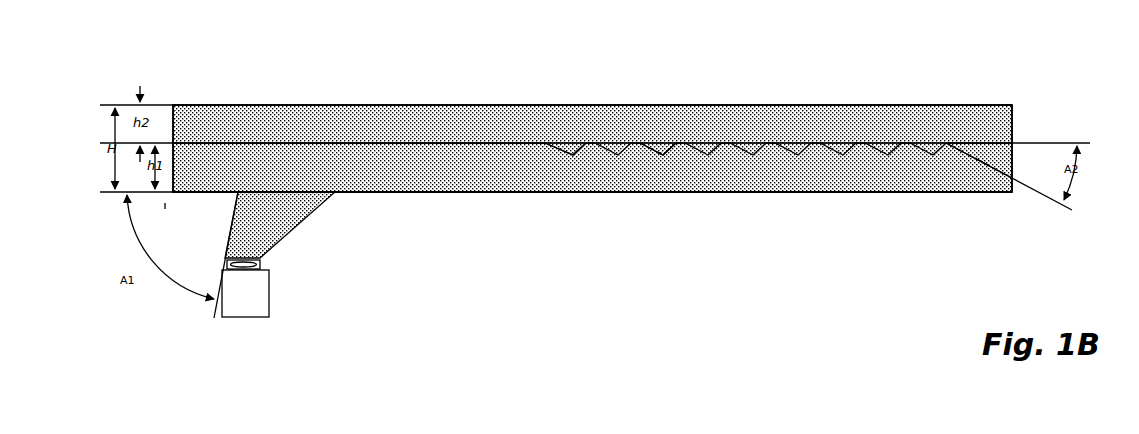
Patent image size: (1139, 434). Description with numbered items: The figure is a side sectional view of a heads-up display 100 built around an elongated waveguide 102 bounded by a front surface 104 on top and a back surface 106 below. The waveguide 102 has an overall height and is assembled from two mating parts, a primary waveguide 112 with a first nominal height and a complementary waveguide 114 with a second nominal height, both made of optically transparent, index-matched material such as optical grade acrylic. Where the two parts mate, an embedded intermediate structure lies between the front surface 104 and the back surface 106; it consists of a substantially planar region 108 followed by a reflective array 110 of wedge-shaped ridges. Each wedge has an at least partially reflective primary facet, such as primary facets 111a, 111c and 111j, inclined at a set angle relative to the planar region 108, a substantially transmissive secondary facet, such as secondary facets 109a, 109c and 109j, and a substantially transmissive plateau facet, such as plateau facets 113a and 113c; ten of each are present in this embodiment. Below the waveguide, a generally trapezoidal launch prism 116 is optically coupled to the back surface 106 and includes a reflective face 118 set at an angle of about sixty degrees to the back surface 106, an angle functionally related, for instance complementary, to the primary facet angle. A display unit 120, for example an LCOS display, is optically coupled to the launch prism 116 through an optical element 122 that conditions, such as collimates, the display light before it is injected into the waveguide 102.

The display 100 is at (172, 50).
The waveguide 102 is at (750, 100).
The front surface 104 is at (290, 104).
The back surface 106 is at (487, 193).
The substantially planar region 108 is at (442, 143).
The reflective array 110 is at (799, 150).
The primary waveguide 112 is at (407, 183).
The complementary waveguide 114 is at (390, 120).
The launch prism 116 is at (298, 214).
The reflective face 118 is at (231, 228).
The display unit 120 is at (235, 318).
The optical element 122 is at (262, 262).
The primary facet 111a is at (553, 147).
The primary facet 111c is at (640, 143).
The primary facet 111j is at (958, 148).
The plateau facet 113a is at (580, 152).
The plateau facet 113c is at (667, 152).
The secondary facet 109a is at (573, 157).
The secondary facet 109c is at (663, 157).
The secondary facet 109j is at (983, 148).